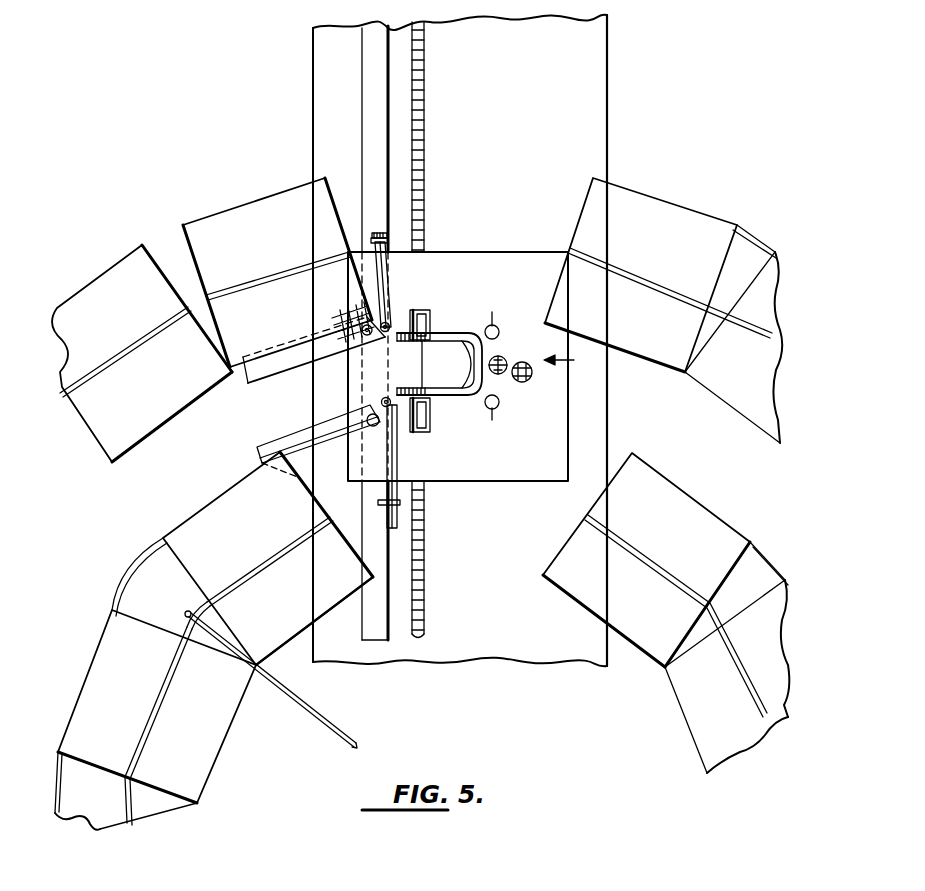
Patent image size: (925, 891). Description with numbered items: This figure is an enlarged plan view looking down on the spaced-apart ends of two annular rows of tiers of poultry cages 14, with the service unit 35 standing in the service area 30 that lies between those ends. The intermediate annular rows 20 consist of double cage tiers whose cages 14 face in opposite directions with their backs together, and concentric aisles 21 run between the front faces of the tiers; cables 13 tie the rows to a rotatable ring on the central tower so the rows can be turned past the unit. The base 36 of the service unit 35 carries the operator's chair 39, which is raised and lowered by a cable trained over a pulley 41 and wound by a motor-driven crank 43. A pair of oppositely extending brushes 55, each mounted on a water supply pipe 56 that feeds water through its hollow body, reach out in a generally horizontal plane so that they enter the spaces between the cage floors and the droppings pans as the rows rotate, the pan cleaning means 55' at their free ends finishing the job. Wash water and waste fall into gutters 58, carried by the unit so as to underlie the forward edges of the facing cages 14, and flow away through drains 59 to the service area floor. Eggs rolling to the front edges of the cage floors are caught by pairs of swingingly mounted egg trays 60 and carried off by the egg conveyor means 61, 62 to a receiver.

The cables 13 is at (325, 718).
The cages 14 is at (227, 212).
The intermediate annular rows 20 is at (111, 606).
The aisles 21 is at (135, 493).
The service area 30 is at (603, 116).
The service unit 35 is at (576, 360).
The base 36 is at (562, 442).
The operator's chair 39 is at (455, 345).
The pulley 41 is at (500, 357).
The crank 43 is at (528, 381).
The brushes 55 is at (401, 383).
The pan cleaning means 55' is at (365, 352).
The water supply pipe 56 is at (390, 325).
The gutters 58 is at (292, 437).
The drains 59 is at (366, 338).
The egg trays 60 is at (430, 318).
The egg conveyor means 61 is at (401, 393).
The egg conveyor means 62 is at (424, 156).